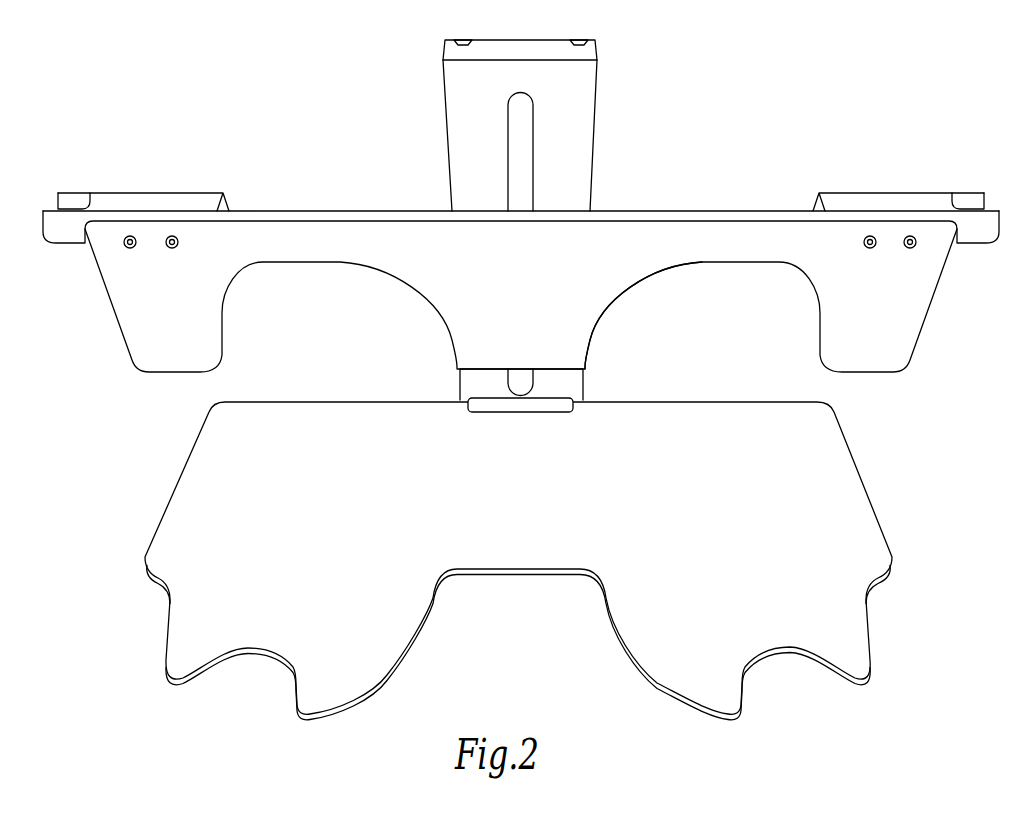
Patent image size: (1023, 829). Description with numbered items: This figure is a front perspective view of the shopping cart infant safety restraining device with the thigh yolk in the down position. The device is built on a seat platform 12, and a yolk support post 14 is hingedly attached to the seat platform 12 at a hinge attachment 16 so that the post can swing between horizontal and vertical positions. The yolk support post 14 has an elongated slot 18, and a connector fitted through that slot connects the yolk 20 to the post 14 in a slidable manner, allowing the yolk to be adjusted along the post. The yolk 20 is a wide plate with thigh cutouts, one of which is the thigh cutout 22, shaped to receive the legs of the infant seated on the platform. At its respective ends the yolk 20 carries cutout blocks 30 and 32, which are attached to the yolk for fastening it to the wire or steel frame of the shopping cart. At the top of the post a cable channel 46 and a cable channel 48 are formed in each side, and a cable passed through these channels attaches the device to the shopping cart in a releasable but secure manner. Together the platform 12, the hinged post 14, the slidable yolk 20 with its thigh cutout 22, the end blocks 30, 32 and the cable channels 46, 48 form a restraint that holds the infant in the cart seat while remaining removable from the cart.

The seat platform 12 is at (200, 500).
The yolk support post 14 is at (565, 382).
The hinge attachment 16 is at (472, 398).
The elongated slot 18 is at (525, 170).
The yolk 20 is at (337, 287).
The thigh cutout 22 is at (712, 287).
The cutout block 30 is at (143, 200).
The cutout block 32 is at (907, 203).
The cable channel 46 is at (463, 40).
The cable channel 48 is at (578, 40).